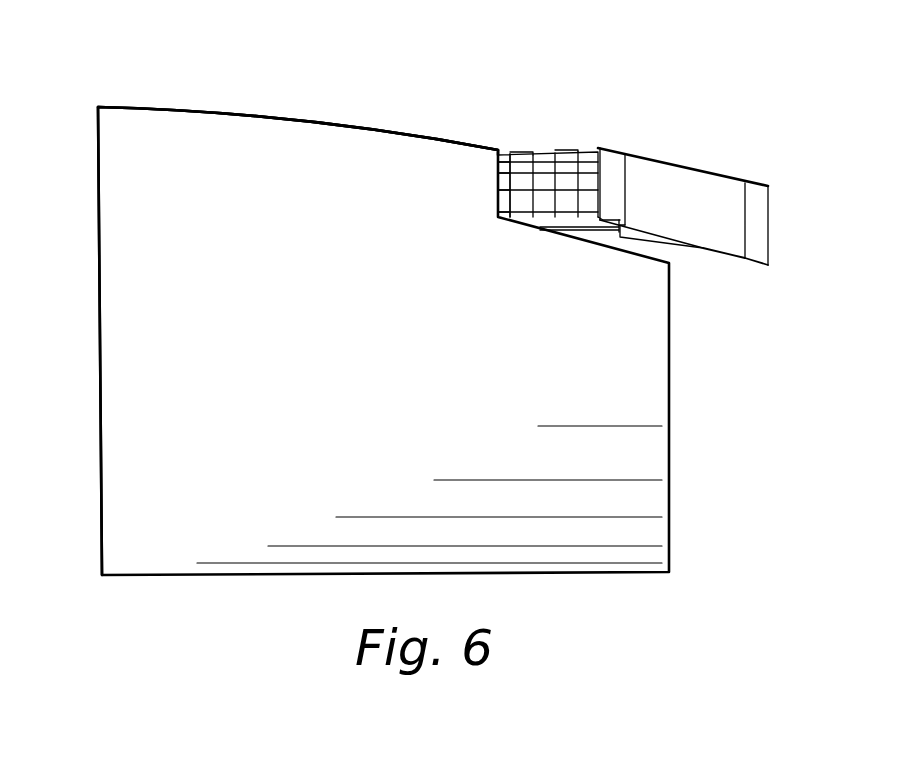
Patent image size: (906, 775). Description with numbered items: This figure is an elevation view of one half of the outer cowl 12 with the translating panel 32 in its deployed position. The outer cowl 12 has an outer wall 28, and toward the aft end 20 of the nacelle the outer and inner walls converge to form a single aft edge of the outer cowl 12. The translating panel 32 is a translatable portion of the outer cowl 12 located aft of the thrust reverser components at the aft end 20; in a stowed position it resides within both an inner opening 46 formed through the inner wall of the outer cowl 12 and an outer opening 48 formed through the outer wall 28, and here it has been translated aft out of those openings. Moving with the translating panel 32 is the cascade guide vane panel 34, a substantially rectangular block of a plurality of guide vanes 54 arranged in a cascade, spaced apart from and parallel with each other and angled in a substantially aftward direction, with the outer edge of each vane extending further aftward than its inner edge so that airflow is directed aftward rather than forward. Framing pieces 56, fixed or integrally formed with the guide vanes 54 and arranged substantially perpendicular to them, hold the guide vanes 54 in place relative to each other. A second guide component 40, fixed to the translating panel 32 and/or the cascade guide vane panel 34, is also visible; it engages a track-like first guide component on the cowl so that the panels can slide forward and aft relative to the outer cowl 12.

The outer cowl 12 is at (158, 76).
The aft end 20 is at (382, 341).
The outer wall 28 is at (133, 420).
The translating panel 32 is at (701, 219).
The cascade guide vane panel 34 is at (501, 153).
The second guide component 40 is at (592, 232).
The inner opening 46 is at (712, 284).
The outer opening 48 is at (690, 270).
The guide vanes 54 is at (505, 200).
The framing pieces 56 is at (550, 157).